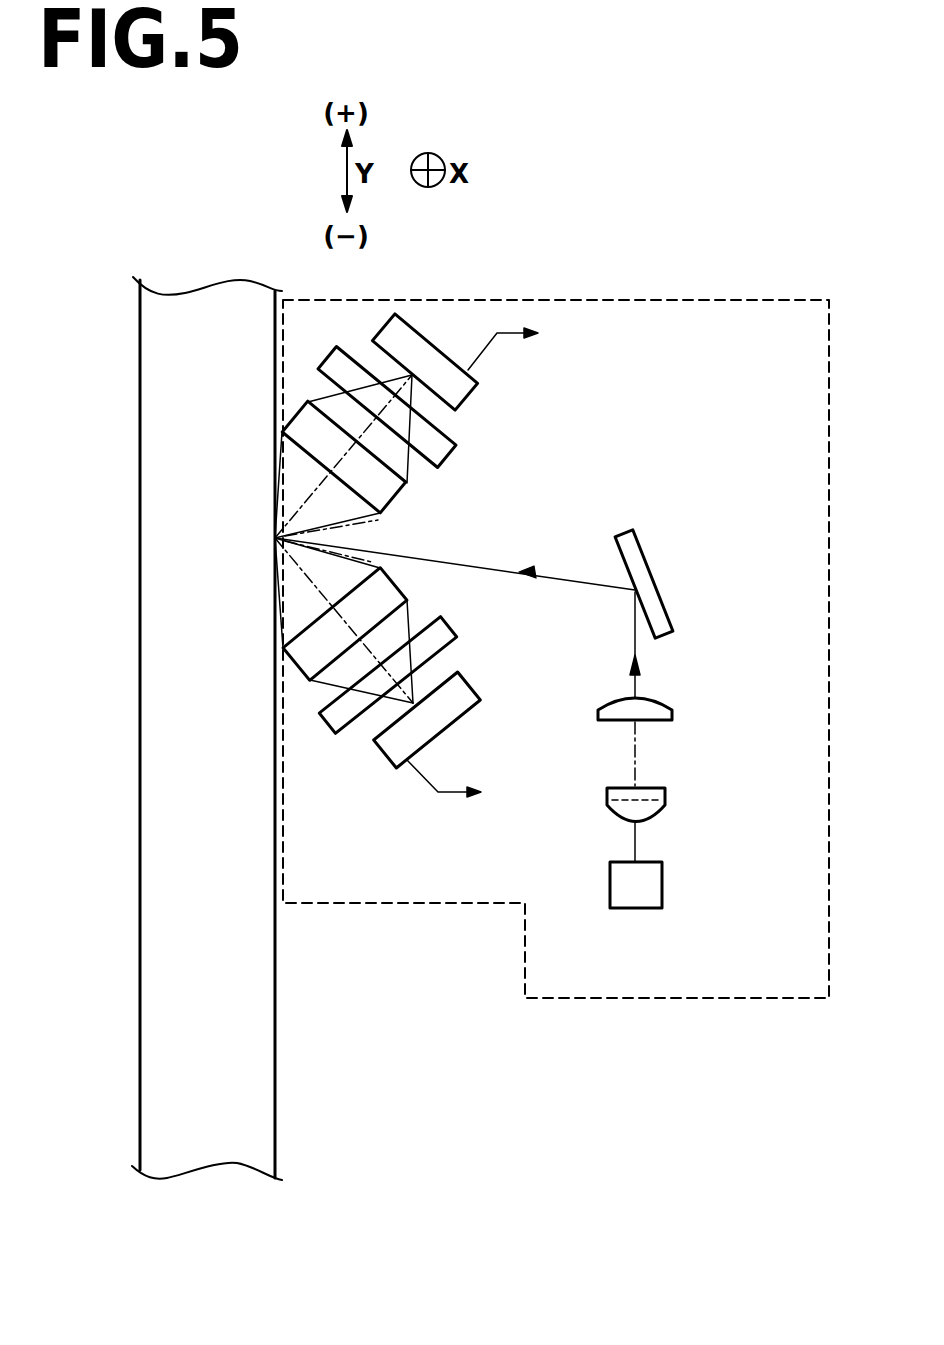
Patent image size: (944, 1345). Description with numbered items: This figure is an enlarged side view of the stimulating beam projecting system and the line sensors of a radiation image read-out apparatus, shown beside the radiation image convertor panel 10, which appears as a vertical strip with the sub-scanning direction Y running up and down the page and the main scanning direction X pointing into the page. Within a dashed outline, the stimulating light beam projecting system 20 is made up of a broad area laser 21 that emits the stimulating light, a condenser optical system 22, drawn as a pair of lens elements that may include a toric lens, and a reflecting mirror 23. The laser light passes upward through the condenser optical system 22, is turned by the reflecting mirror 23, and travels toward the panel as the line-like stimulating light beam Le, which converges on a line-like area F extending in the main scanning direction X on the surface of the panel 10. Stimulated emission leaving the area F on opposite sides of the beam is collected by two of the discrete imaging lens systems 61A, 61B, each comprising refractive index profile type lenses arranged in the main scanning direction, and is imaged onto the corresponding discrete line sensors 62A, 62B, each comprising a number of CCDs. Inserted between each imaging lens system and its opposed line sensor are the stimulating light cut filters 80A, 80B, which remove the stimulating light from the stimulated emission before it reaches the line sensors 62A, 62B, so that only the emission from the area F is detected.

The radiation image convertor panel 10 is at (180, 1160).
The stimulating light beam projecting system 20 is at (703, 720).
The broad area laser 21 is at (674, 885).
The condenser optical system 22 is at (677, 693).
The reflecting mirror 23 is at (654, 608).
The imaging lens system 61A is at (386, 592).
The imaging lens system 61B is at (388, 494).
The line sensor 62A is at (461, 692).
The line sensor 62B is at (461, 391).
The stimulating light cut filter 80A is at (440, 628).
The stimulating light cut filter 80B is at (444, 452).
The line-like area F is at (282, 539).
The stimulating light beam Le is at (572, 573).